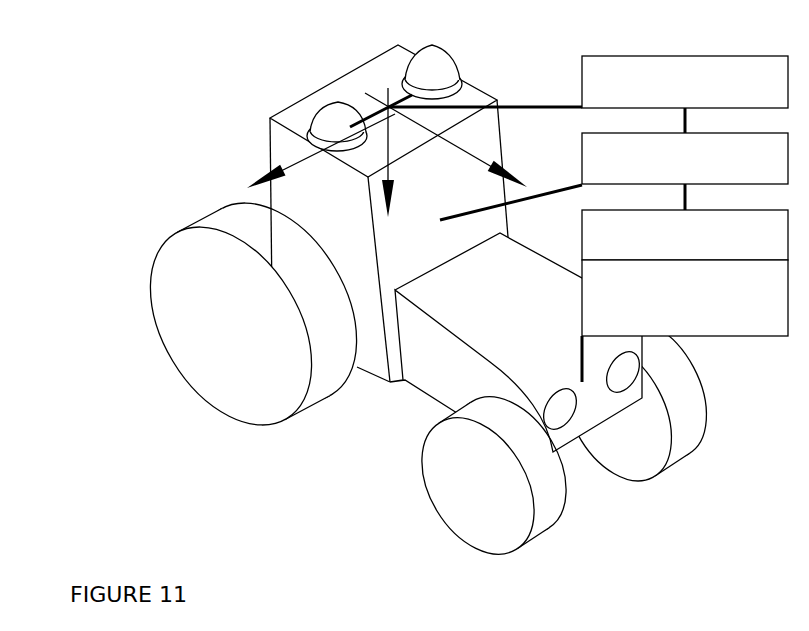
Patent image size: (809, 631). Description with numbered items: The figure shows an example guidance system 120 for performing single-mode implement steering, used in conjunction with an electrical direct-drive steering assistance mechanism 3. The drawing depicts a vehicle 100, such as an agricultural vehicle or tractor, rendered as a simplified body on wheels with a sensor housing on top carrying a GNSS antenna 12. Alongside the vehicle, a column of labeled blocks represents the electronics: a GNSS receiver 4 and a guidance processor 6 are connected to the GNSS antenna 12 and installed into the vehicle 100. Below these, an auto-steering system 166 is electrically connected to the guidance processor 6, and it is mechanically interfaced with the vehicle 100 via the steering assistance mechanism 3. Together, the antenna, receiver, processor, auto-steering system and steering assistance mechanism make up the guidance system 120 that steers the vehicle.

The guidance system 120 is at (452, 301).
The vehicle 100 is at (422, 309).
The GNSS antenna 12 is at (418, 67).
The GNSS receiver 4 is at (685, 82).
The guidance processor 6 is at (685, 158).
The auto-steering system 166 is at (685, 235).
The electrical direct-drive steering assistance mechanism 3 is at (685, 298).